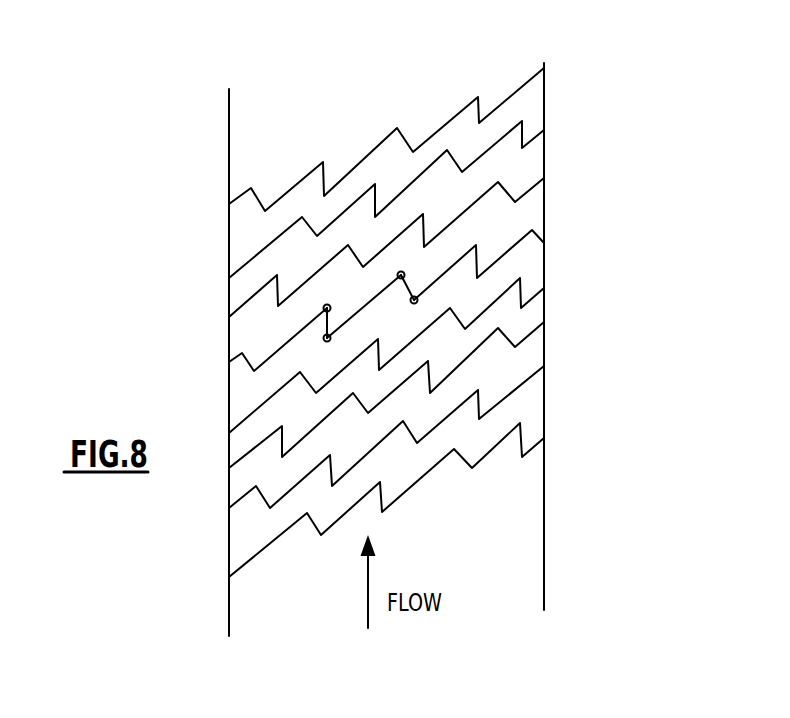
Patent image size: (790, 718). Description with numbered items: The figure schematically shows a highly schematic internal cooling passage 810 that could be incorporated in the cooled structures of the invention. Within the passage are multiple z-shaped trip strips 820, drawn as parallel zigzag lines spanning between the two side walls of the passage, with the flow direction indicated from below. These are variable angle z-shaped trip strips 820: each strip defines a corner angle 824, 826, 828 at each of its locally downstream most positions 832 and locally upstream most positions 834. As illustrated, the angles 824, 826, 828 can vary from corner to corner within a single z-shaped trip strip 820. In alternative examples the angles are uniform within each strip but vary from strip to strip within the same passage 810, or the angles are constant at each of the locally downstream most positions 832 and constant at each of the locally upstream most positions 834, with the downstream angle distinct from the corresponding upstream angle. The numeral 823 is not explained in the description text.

The internal cooling passage 810 is at (440, 66).
The z-shaped trip strips 820 is at (509, 126).
The first side surface of rib 823 is at (315, 336).
The corner angle 824 is at (340, 316).
The corner angle 826 is at (418, 280).
The corner angle 828 is at (415, 297).
The locally downstream most positions 832 is at (323, 305).
The locally upstream most positions 834 is at (324, 342).